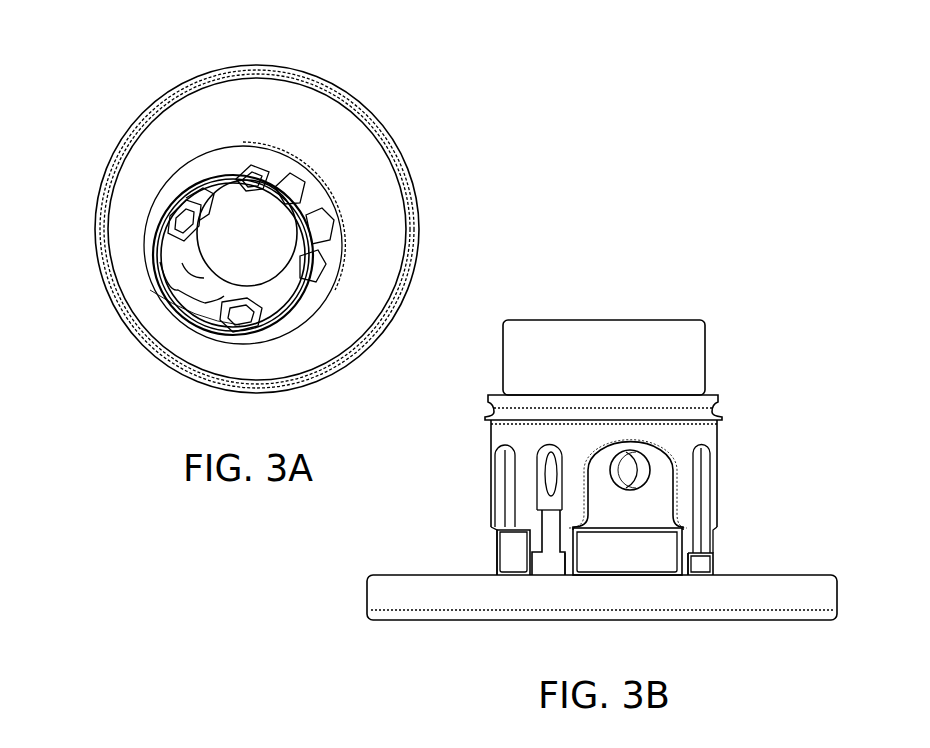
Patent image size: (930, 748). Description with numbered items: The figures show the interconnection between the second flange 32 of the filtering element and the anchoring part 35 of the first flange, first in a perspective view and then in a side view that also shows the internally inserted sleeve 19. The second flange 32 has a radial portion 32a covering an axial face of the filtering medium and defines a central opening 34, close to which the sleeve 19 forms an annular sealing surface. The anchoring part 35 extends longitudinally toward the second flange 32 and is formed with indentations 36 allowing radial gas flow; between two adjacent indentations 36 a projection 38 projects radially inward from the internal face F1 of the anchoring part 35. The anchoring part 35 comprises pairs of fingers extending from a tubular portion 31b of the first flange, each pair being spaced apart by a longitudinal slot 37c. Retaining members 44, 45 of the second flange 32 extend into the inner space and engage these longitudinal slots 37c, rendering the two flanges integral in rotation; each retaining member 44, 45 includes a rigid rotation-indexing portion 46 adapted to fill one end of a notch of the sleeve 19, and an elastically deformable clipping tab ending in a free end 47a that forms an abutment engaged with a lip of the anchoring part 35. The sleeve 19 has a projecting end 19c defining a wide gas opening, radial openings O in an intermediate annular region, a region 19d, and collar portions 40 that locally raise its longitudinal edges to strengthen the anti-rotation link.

In FIG. 3A, the second flange 32 is at (193, 77).
In FIG. 3B, the second flange 32 is at (462, 622).
In FIG. 3A, the radial portion 32a is at (140, 172).
In FIG. 3A, the central opening 34 is at (258, 235).
In FIG. 3A, the anchoring part 35 is at (143, 241).
In FIG. 3B, the anchoring part 35 is at (720, 437).
In FIG. 3A, the indentations 36 is at (287, 193).
In FIG. 3B, the indentations 36 is at (670, 485).
In FIG. 3A, the projection 38 is at (177, 217).
In FIG. 3A, the retaining member 44 is at (253, 170).
In FIG. 3B, the retaining member 44 is at (700, 517).
In FIG. 3A, the rigid rotation-indexing portion 46 is at (188, 207).
In FIG. 3B, the rigid rotation-indexing portion 46 is at (545, 575).
In FIG. 3A, the free end 47a is at (227, 317).
In FIG. 3A, the internal face F1 is at (160, 258).
In FIG. 3B, the sleeve 19 is at (623, 345).
In FIG. 3B, the projecting end 19c is at (652, 318).
In FIG. 3B, the nut flange 19d is at (497, 395).
In FIG. 3B, the tubular portion 31b is at (517, 428).
In FIG. 3B, the radial openings O is at (637, 467).
In FIG. 3B, the longitudinal slot 37c is at (542, 482).
In FIG. 3B, the retaining member 45 is at (547, 523).
In FIG. 3B, the collar portions 40 is at (633, 555).